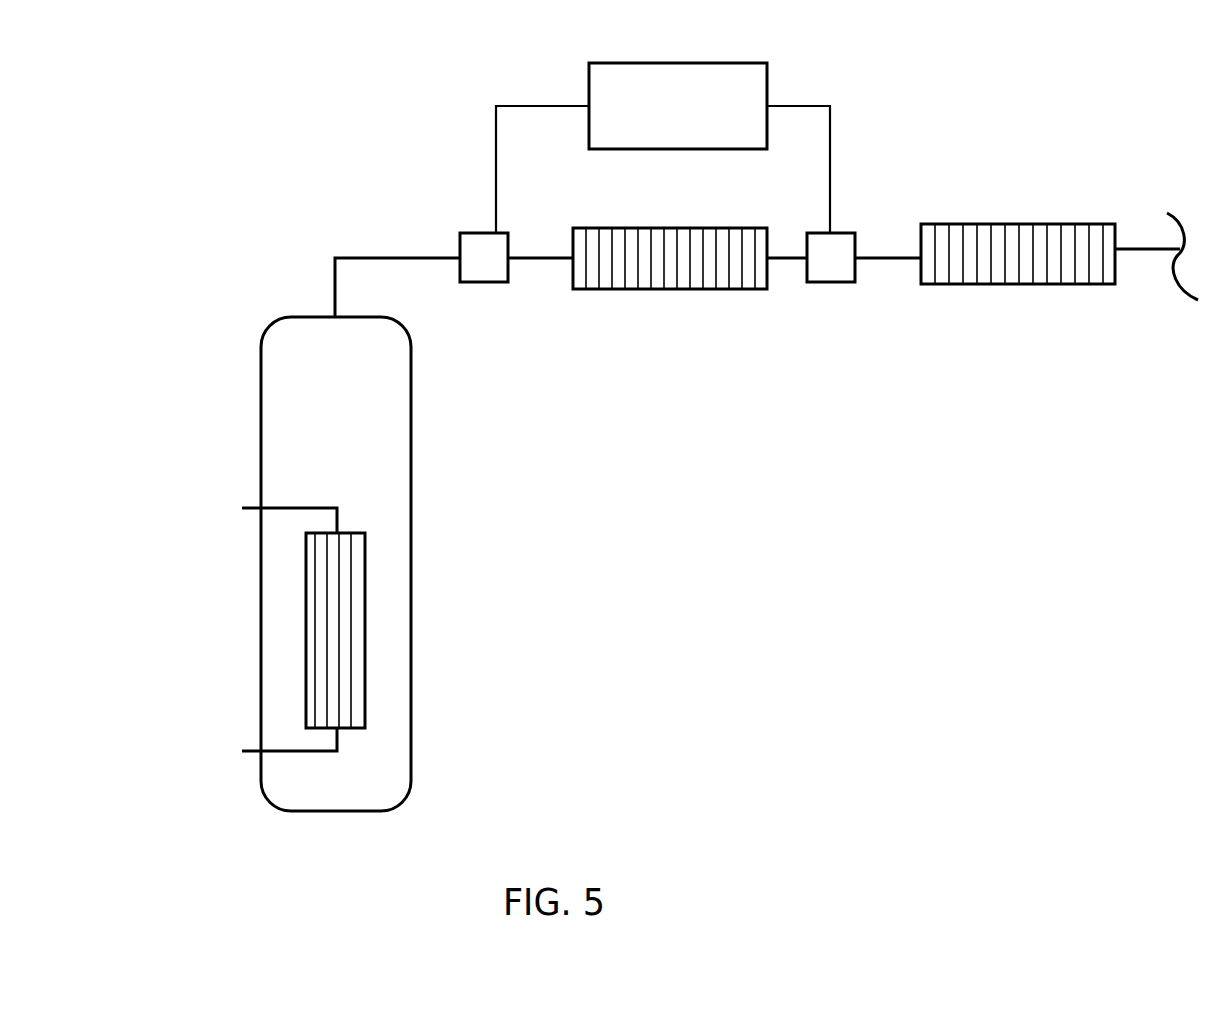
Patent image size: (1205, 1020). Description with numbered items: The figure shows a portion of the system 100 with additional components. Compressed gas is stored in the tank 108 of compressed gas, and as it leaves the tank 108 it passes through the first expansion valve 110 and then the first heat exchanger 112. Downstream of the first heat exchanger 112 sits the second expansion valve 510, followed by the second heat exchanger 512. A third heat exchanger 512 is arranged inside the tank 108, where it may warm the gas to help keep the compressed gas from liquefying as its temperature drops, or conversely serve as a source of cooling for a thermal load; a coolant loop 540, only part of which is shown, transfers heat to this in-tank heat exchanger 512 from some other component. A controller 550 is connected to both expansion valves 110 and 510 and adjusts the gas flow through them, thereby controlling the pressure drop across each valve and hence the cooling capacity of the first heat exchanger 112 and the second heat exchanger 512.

The system 100 is at (200, 798).
The tank of compressed gas 108 is at (412, 494).
The first expansion valve 110 is at (478, 232).
The first heat exchanger 112 is at (608, 290).
The second expansion valve 510 is at (841, 232).
The heat exchanger 512 is at (957, 286).
The coolant loop 540 is at (301, 505).
The controller 550 is at (741, 64).